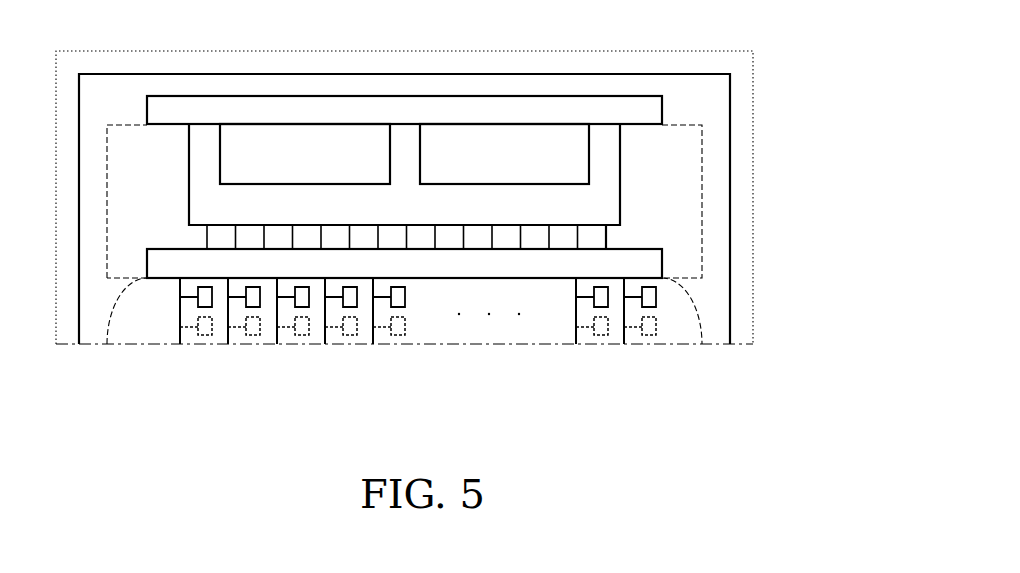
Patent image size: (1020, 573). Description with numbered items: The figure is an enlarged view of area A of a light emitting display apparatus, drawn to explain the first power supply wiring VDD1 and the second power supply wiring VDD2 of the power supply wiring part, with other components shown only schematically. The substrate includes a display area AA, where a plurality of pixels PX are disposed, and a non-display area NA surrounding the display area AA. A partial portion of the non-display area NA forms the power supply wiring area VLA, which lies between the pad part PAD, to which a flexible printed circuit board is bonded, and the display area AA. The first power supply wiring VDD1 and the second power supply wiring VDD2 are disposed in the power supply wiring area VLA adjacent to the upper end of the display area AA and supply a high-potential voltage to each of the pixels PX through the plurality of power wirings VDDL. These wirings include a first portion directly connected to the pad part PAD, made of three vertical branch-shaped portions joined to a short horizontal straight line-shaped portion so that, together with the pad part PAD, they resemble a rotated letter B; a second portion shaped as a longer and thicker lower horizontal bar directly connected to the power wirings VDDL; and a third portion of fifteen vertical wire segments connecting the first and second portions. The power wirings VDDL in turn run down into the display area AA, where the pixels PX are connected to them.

The area A is at (753, 50).
The pad part PAD is at (457, 108).
The power supply wiring area VLA is at (693, 175).
The first power supply wiring VDD1 is at (607, 235).
The second power supply wiring VDD2 is at (768, 238).
The non-display area NA is at (712, 315).
The display area AA is at (397, 337).
The power wirings VDDL is at (180, 322).
The pixels PX is at (203, 332).